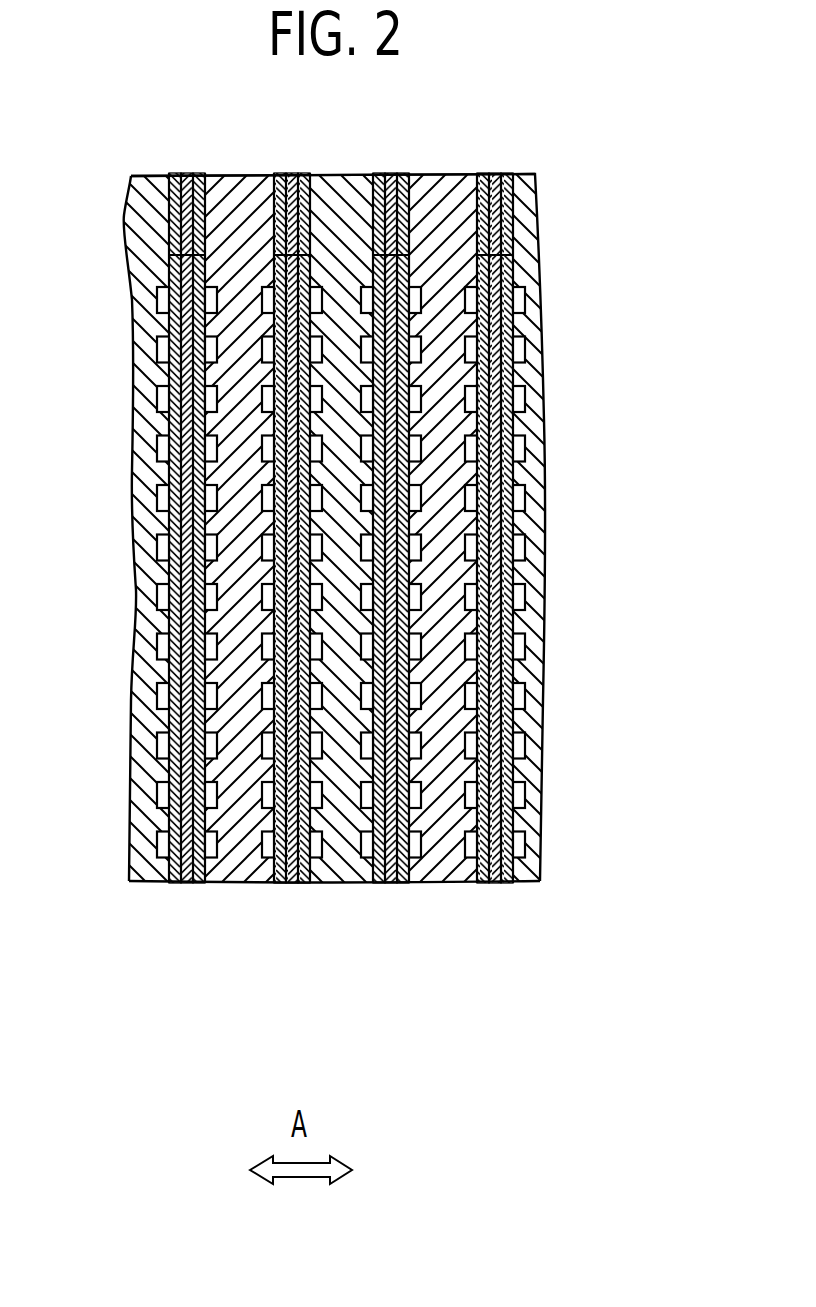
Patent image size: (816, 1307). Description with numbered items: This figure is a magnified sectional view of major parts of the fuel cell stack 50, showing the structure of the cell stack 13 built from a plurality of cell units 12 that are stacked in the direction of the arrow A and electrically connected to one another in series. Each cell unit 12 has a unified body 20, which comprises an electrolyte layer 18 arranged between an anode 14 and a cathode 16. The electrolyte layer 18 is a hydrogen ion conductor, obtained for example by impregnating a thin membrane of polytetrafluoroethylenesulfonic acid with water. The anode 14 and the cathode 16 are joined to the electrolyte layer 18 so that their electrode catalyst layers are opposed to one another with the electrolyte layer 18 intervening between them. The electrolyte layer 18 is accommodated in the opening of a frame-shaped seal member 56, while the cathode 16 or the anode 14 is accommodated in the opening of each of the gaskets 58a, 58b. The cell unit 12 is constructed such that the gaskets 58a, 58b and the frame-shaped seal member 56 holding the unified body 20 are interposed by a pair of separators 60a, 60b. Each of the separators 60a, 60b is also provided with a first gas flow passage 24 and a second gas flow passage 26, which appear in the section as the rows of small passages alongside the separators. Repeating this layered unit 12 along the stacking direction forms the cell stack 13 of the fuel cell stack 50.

The fuel cell stack 50 is at (323, 483).
The cell stack 13 is at (333, 175).
The frame-shaped seal member 56 is at (393, 175).
The gasket 58a is at (478, 204).
The gasket 58b is at (513, 210).
The first gas flow passage 24 is at (465, 297).
The second gas flow passage 26 is at (528, 303).
The anode 14 is at (160, 378).
The cathode 16 is at (538, 637).
The electrolyte layer 18 is at (517, 680).
The unified body 20 is at (667, 783).
The separator 60a is at (230, 883).
The separator 60b is at (356, 883).
The cell unit 12 is at (387, 995).